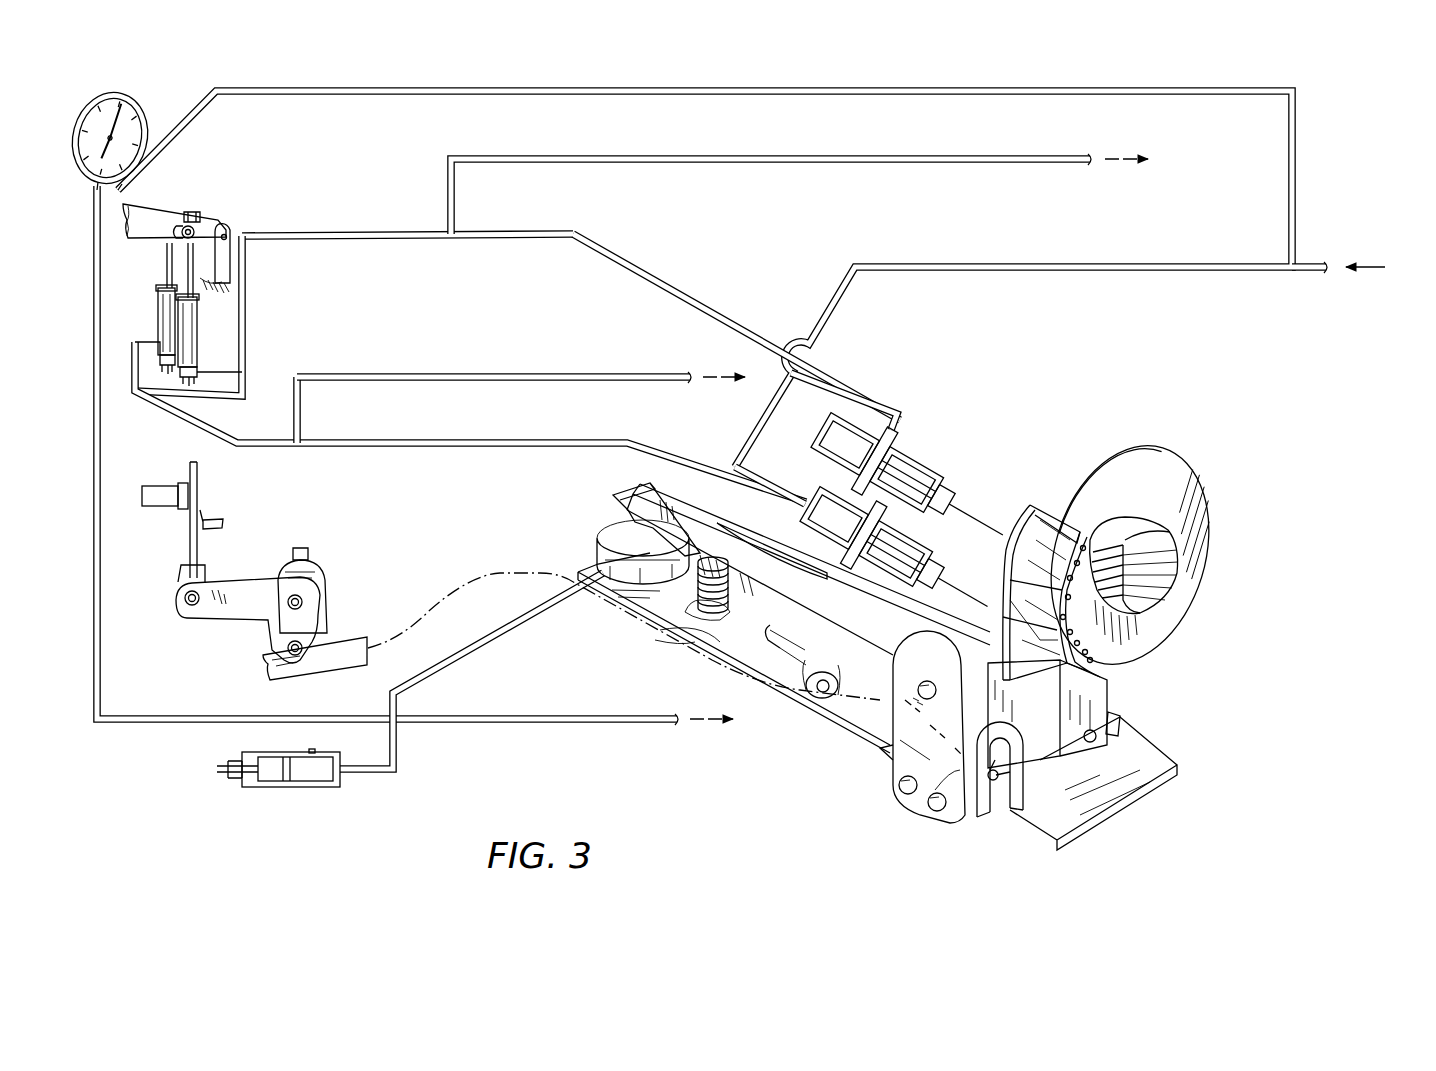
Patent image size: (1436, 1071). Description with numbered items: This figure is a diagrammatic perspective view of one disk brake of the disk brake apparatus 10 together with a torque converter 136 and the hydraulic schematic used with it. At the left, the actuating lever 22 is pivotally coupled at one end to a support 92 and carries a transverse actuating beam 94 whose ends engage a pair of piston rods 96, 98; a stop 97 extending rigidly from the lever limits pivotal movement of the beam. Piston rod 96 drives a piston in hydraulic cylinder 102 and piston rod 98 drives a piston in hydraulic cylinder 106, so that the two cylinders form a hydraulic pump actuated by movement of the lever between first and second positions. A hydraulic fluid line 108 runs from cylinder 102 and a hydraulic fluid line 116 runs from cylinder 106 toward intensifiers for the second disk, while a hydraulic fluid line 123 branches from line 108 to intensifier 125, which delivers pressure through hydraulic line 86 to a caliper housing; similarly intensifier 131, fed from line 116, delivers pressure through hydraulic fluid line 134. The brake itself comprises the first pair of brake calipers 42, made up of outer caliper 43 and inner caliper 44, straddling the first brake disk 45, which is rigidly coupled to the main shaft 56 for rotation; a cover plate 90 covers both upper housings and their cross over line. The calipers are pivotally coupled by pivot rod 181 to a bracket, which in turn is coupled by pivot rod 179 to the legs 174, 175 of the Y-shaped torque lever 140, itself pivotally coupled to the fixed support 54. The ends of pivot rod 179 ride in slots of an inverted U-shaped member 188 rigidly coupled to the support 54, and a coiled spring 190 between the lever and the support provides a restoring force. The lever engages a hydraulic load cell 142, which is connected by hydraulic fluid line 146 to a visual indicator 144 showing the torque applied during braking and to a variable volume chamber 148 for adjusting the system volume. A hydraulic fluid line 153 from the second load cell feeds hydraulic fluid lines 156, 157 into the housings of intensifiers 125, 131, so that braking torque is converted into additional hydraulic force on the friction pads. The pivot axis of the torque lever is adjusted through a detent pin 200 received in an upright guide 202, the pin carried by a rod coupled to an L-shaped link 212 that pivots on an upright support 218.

The disk brake apparatus 10 is at (808, 626).
The actuating lever 22 is at (200, 268).
The first pair of brake calipers 42 is at (1052, 556).
The outer caliper 43 is at (1024, 500).
The inner caliper 44 is at (1095, 666).
The first brake disk 45 is at (1170, 442).
The fixed support 54 is at (1093, 834).
The main shaft 56 is at (1175, 542).
The hydraulic line 86 is at (948, 527).
The cover plate 90 is at (1065, 535).
The support 92 is at (232, 250).
The transverse actuating beam 94 is at (167, 222).
The piston rod 96 is at (210, 295).
The stop 97 is at (200, 212).
The piston rod 98 is at (165, 263).
The hydraulic cylinder 102 is at (198, 345).
The hydraulic cylinder 106 is at (160, 319).
The hydraulic fluid line 108 is at (710, 157).
The hydraulic fluid line 116 is at (535, 374).
The hydraulic fluid line 123 is at (618, 248).
The hydraulic intensifier 125 is at (912, 479).
The hydraulic intensifier 131 is at (865, 555).
The hydraulic fluid line 134 is at (965, 605).
The torque converter 136 is at (650, 660).
The torque lever 140 is at (630, 486).
The hydraulic load cell 142 is at (597, 515).
The visual indicator 144 is at (116, 94).
The hydraulic fluid line 146 is at (103, 666).
The variable volume chamber 148 is at (308, 789).
The hydraulic fluid line 153 is at (700, 88).
The hydraulic fluid line 156 is at (811, 430).
The hydraulic fluid line 157 is at (759, 477).
The leg 174 is at (864, 592).
The leg 175 is at (786, 592).
The pivot rod 179 is at (990, 795).
The pivot rod 181 is at (1097, 734).
The inverted U-shaped member 188 is at (1011, 807).
The coiled spring 190 is at (688, 620).
The detent pin 200 is at (201, 500).
The upright guide 202 is at (196, 460).
The L-shaped link 212 is at (232, 620).
The upright support 218 is at (322, 586).